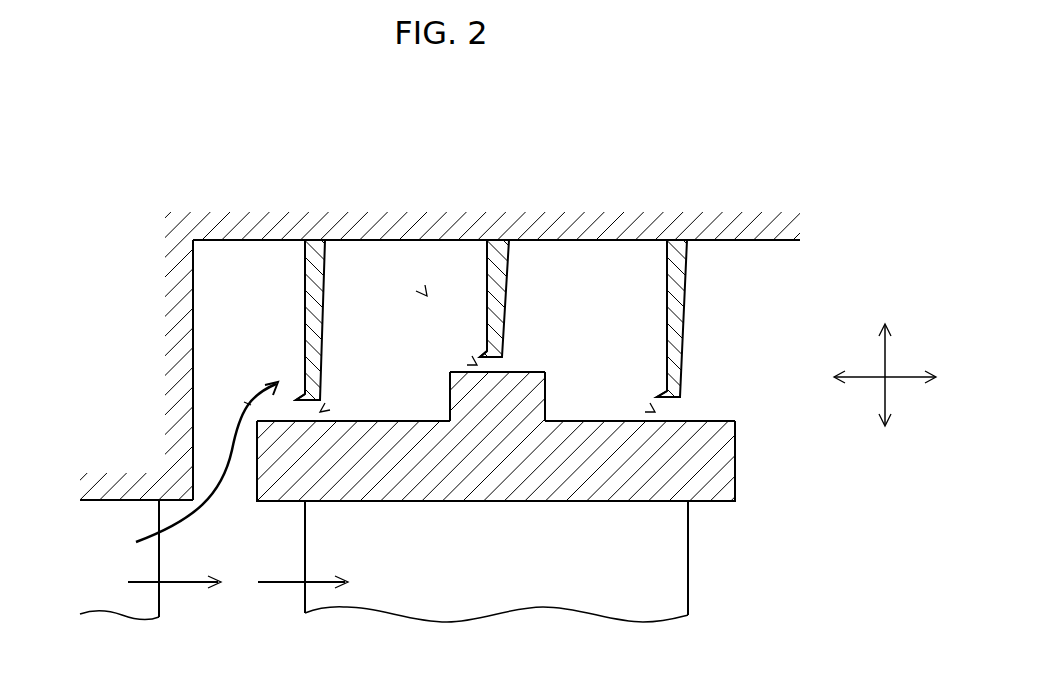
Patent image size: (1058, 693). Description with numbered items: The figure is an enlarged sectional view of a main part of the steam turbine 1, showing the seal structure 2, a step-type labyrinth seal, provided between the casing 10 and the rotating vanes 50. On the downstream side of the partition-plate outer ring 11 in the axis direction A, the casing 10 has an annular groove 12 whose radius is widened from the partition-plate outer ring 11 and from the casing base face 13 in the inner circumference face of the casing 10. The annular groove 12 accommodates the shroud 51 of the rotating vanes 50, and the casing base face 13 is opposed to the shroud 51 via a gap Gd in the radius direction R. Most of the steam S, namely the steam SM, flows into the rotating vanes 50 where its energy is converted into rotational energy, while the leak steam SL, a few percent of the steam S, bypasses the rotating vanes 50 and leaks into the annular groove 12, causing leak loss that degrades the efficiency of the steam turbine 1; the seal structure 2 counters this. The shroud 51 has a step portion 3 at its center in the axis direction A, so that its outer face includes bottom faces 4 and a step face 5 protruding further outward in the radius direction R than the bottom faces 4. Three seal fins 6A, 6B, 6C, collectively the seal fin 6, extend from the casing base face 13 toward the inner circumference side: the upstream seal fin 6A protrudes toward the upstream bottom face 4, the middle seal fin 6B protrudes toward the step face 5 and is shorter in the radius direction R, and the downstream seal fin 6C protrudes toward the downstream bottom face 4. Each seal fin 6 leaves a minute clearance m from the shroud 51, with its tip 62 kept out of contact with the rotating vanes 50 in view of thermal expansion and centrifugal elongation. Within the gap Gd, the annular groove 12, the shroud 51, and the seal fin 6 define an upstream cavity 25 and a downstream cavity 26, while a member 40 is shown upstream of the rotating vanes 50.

The steam turbine 1 is at (711, 158).
The seal structure 2 is at (221, 321).
The step portion 3 is at (547, 385).
The bottom faces 4 is at (403, 420).
The step face 5 is at (536, 372).
The seal fin 6 is at (490, 320).
The upstream seal fin 6A is at (325, 312).
The middle seal fin 6B is at (509, 290).
The downstream seal fin 6C is at (667, 262).
The casing 10 is at (219, 204).
The partition-plate outer ring 11 is at (100, 501).
The annular groove 12 is at (241, 496).
The casing base face 13 is at (765, 241).
The upstream cavity 25 is at (458, 251).
The downstream cavity 26 is at (546, 256).
The upstream member 40 is at (103, 614).
The rotating vanes 50 is at (693, 606).
The shroud 51 is at (713, 494).
The blade tip 62 is at (300, 397).
The gap Gd is at (425, 293).
The minute clearance m is at (322, 411).
The leak steam SL is at (250, 404).
The steam S is at (185, 584).
The steam MS SM is at (274, 584).
The axis direction A is at (873, 378).
The radius direction R is at (885, 363).